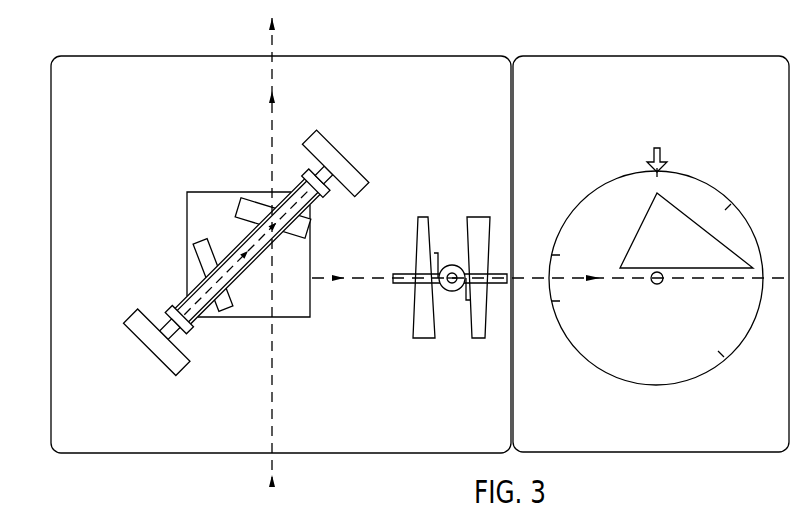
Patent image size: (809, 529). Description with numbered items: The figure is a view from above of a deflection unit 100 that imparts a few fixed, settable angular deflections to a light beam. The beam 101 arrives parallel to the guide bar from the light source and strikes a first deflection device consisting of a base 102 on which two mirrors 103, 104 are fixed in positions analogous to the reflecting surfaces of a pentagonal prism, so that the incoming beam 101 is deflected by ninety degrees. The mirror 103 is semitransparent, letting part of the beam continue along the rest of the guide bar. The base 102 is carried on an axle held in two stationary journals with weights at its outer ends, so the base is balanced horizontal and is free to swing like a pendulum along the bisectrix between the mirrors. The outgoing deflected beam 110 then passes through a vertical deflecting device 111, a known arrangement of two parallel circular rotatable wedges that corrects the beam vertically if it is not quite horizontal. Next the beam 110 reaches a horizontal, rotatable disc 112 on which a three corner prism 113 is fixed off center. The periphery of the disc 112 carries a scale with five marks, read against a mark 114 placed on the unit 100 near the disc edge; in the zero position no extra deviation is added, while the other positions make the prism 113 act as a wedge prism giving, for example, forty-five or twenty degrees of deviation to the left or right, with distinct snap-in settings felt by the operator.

The deflection unit 100 is at (186, 461).
The beam 101 is at (276, 487).
The base 102 is at (285, 321).
The mirror 103 is at (300, 228).
The mirror 104 is at (226, 310).
The outgoing deflected beam 110 is at (342, 282).
The vertical deflecting device 111 is at (450, 333).
The rotatable disc 112 is at (635, 383).
The three corner prism 113 is at (640, 227).
The mark 114 is at (663, 153).